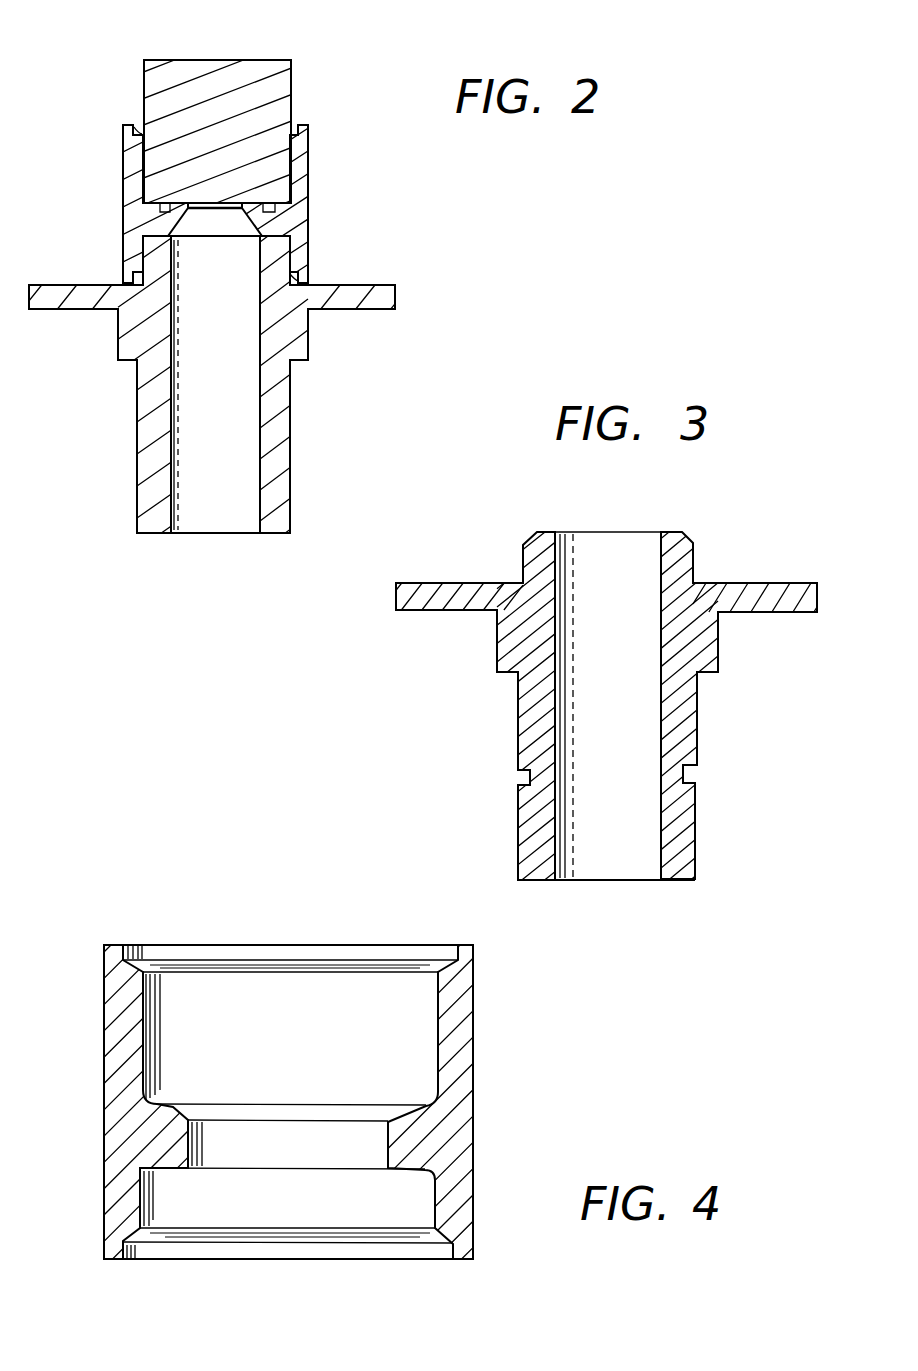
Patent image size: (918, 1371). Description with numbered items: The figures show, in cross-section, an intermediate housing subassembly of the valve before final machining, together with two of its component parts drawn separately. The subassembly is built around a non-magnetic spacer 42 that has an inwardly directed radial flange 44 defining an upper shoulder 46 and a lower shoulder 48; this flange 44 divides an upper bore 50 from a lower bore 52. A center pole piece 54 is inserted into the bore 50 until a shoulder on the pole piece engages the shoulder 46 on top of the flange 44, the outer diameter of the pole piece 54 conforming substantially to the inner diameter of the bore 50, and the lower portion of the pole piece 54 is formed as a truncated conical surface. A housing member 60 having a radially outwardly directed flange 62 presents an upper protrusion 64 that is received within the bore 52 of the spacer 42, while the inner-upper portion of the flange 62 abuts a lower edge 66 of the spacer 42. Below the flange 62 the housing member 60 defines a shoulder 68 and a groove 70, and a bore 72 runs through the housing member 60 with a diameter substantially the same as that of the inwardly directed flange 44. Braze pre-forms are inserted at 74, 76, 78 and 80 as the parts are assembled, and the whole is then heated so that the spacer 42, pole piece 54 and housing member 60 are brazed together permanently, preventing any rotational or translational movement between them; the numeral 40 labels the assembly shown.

In FIG. 2, the valve assembly 40 is at (296, 448).
In FIG. 2, the spacer 42 is at (308, 180).
In FIG. 4, the spacer 42 is at (473, 1083).
In FIG. 4, the inwardly directed radial flange 44 is at (173, 1153).
In FIG. 4, the shoulder 46 is at (165, 1105).
In FIG. 4, the shoulder 48 is at (400, 1170).
In FIG. 4, the bore 50 is at (437, 1018).
In FIG. 4, the bore 52 is at (423, 1195).
In FIG. 2, the center pole piece 54 is at (293, 76).
In FIG. 2, the housing member 60 is at (137, 396).
In FIG. 3, the housing member 60 is at (488, 748).
In FIG. 3, the radially outwardly directed flange 62 is at (396, 598).
In FIG. 3, the upper protrusion 64 is at (693, 562).
In FIG. 4, the lower edge 66 is at (462, 1259).
In FIG. 3, the shoulder 68 is at (712, 678).
In FIG. 3, the groove 70 is at (697, 778).
In FIG. 3, the bore 72 is at (661, 838).
In FIG. 2, the braze pre-form location 74 is at (138, 128).
In FIG. 2, the braze pre-form location 76 is at (163, 208).
In FIG. 2, the braze pre-form location 78 is at (305, 240).
In FIG. 2, the braze pre-form location 80 is at (305, 268).